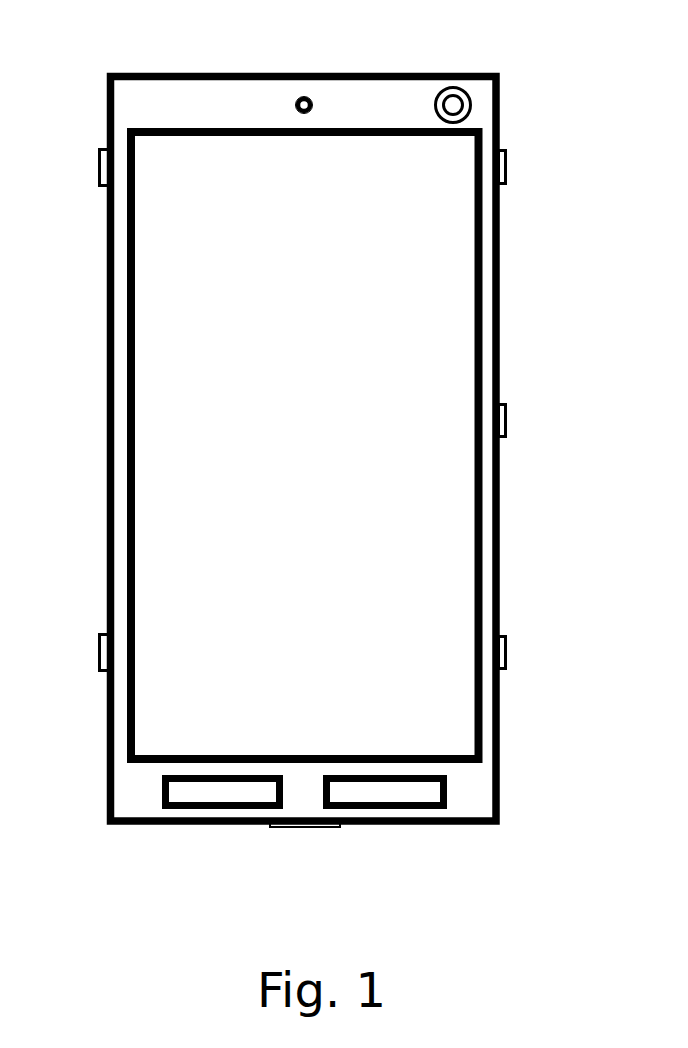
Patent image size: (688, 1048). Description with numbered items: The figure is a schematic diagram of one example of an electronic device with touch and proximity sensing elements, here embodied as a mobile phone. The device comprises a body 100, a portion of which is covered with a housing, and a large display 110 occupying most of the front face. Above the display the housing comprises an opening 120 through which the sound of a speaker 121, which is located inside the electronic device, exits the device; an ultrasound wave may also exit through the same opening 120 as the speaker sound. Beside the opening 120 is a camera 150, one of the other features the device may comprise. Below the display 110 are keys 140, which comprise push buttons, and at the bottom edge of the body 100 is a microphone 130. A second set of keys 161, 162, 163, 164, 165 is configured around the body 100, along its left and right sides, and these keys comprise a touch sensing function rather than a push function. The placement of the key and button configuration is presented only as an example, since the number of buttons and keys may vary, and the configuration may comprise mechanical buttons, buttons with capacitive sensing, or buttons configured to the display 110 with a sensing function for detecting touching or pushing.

The body 100 is at (118, 107).
The display 110 is at (155, 337).
The opening 120 is at (299, 97).
The speaker 121 is at (306, 105).
The microphone 130 is at (295, 828).
The keys 140 is at (342, 775).
The camera 150 is at (467, 88).
The key of second set of keys 161 is at (507, 175).
The key of second set of keys 162 is at (507, 419).
The key of second set of keys 163 is at (507, 651).
The key of second set of keys 164 is at (98, 652).
The key of second set of keys 165 is at (98, 178).